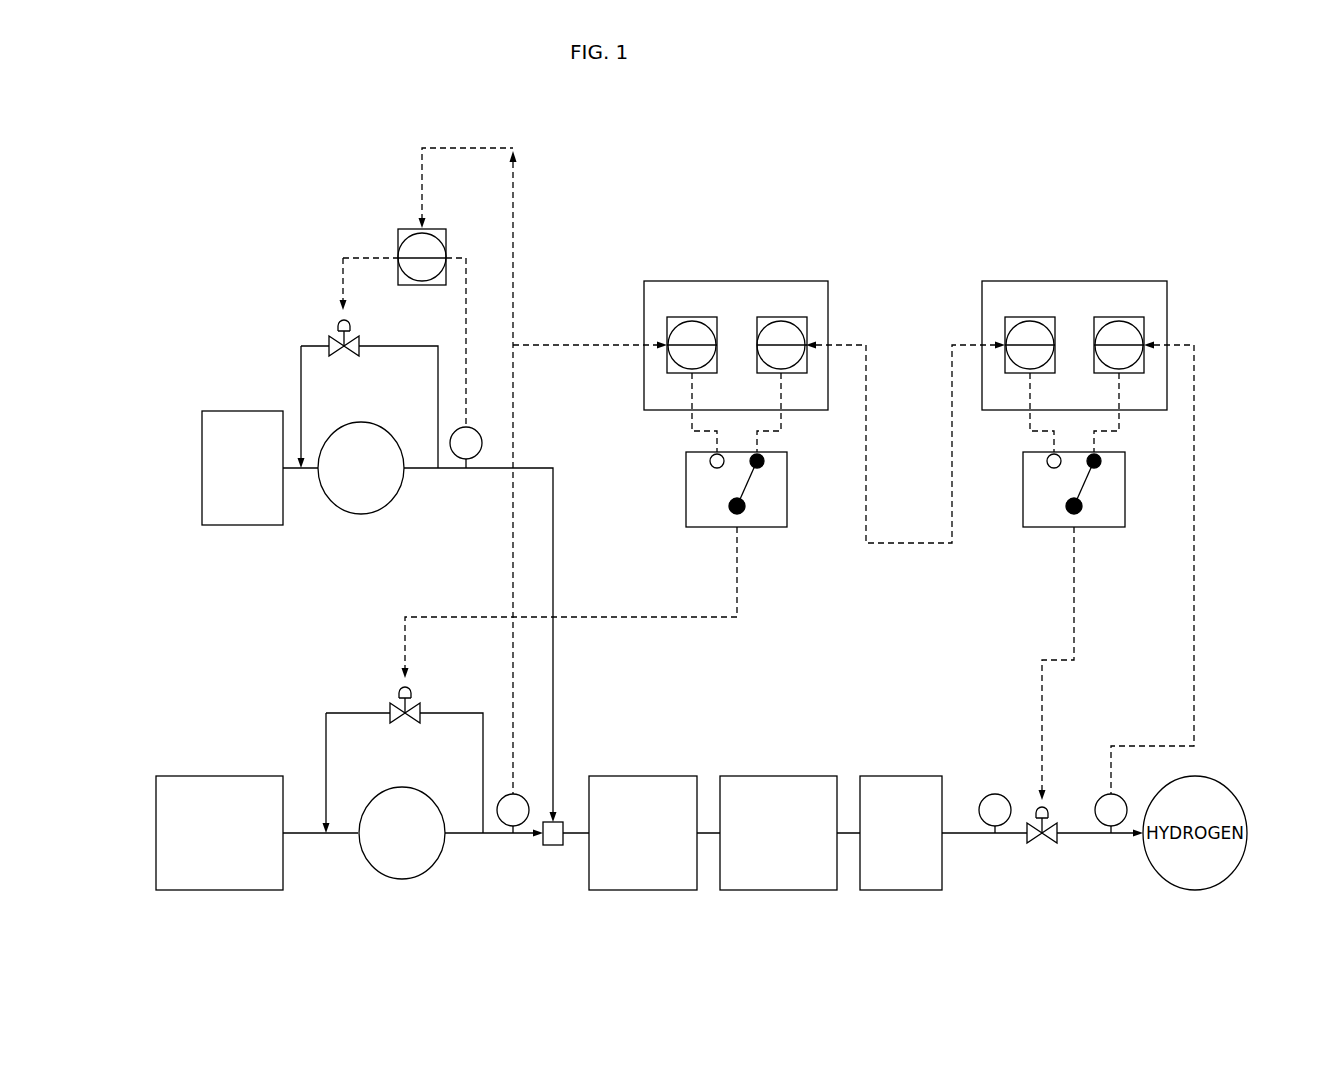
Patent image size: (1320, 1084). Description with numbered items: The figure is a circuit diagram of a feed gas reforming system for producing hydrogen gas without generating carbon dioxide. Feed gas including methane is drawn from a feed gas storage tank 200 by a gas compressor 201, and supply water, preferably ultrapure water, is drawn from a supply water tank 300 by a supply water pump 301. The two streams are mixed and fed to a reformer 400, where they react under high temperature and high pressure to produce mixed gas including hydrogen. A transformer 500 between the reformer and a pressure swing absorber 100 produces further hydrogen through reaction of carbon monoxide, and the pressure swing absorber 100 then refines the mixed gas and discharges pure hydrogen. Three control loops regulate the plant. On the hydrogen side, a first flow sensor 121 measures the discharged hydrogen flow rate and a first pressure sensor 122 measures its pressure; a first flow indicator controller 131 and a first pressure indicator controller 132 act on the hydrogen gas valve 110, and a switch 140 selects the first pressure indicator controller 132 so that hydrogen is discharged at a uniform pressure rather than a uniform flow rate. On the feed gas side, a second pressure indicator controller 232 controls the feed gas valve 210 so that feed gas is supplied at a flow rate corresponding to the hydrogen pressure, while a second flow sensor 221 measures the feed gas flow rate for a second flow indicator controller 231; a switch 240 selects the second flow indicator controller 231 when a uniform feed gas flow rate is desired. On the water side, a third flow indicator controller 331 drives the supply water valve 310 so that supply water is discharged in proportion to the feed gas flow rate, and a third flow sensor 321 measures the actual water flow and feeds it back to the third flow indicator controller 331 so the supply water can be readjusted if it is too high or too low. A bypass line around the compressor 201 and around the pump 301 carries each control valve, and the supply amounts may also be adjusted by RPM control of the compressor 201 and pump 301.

The pressure swing absorber (PSA) 100 is at (901, 890).
The hydrogen gas valve 110 is at (1048, 843).
The first flow sensor 121 is at (1100, 797).
The first pressure sensor 122 is at (985, 797).
The first flow indicator controller 131 is at (1119, 317).
The first pressure indicator controller 132 is at (1030, 317).
The switch 140 is at (1103, 527).
The feed gas storage tank 200 is at (220, 890).
The gas compressor 201 is at (402, 879).
The feed gas valve 210 is at (390, 703).
The second flow sensor 221 is at (513, 828).
The second flow indicator controller 231 is at (692, 317).
The second pressure indicator controller 232 is at (781, 317).
The switch 240 is at (767, 527).
The supply water tank 300 is at (242, 525).
The supply water pump 301 is at (361, 514).
The supply water valve 310 is at (330, 336).
The third flow sensor 321 is at (466, 460).
The third flow indicator controller 331 is at (400, 229).
The reformer 400 is at (643, 890).
The transformer 500 is at (779, 890).